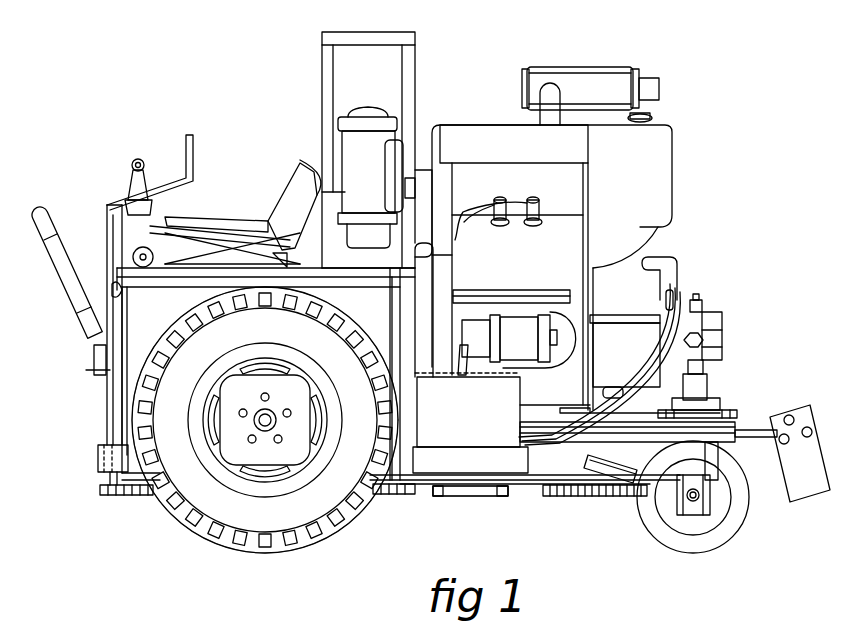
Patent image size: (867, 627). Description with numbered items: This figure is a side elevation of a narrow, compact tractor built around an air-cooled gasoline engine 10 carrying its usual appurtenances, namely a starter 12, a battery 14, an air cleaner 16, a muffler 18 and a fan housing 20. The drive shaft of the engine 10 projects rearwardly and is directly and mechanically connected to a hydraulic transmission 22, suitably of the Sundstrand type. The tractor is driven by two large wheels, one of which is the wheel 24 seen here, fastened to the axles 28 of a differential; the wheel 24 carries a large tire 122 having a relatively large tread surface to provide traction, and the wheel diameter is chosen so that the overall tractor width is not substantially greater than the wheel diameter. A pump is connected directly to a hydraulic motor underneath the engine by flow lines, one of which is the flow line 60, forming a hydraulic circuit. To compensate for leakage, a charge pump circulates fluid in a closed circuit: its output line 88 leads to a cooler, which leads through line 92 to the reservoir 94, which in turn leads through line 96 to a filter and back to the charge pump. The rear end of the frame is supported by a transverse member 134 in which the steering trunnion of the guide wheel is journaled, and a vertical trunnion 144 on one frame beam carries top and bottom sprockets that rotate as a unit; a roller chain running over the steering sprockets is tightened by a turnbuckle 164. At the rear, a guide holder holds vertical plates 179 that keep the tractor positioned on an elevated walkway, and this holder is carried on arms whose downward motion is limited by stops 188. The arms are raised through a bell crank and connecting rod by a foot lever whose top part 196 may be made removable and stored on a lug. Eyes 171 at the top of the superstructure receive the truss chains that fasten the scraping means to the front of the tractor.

The air-cooled gasoline engine 10 is at (492, 108).
The starter 12 is at (513, 327).
The battery 14 is at (475, 438).
The air cleaner 16 is at (355, 153).
The muffler 18 is at (583, 75).
The fan housing 20 is at (449, 318).
The hydraulic transmission 22 is at (716, 290).
The wheel 24 is at (247, 565).
The axles 28 is at (266, 432).
The flow line 60 is at (722, 345).
The output line 88 is at (703, 369).
The line 92 is at (690, 282).
The reservoir 94 is at (635, 250).
The line 96 is at (600, 387).
The tire 122 is at (203, 495).
The transverse member 134 is at (700, 408).
The vertical trunnion 144 is at (645, 478).
The turnbuckle 164 is at (483, 500).
The eyes 171 is at (113, 282).
The vertical plates 179 is at (807, 485).
The stops 188 is at (607, 470).
The top part 196 is at (50, 220).